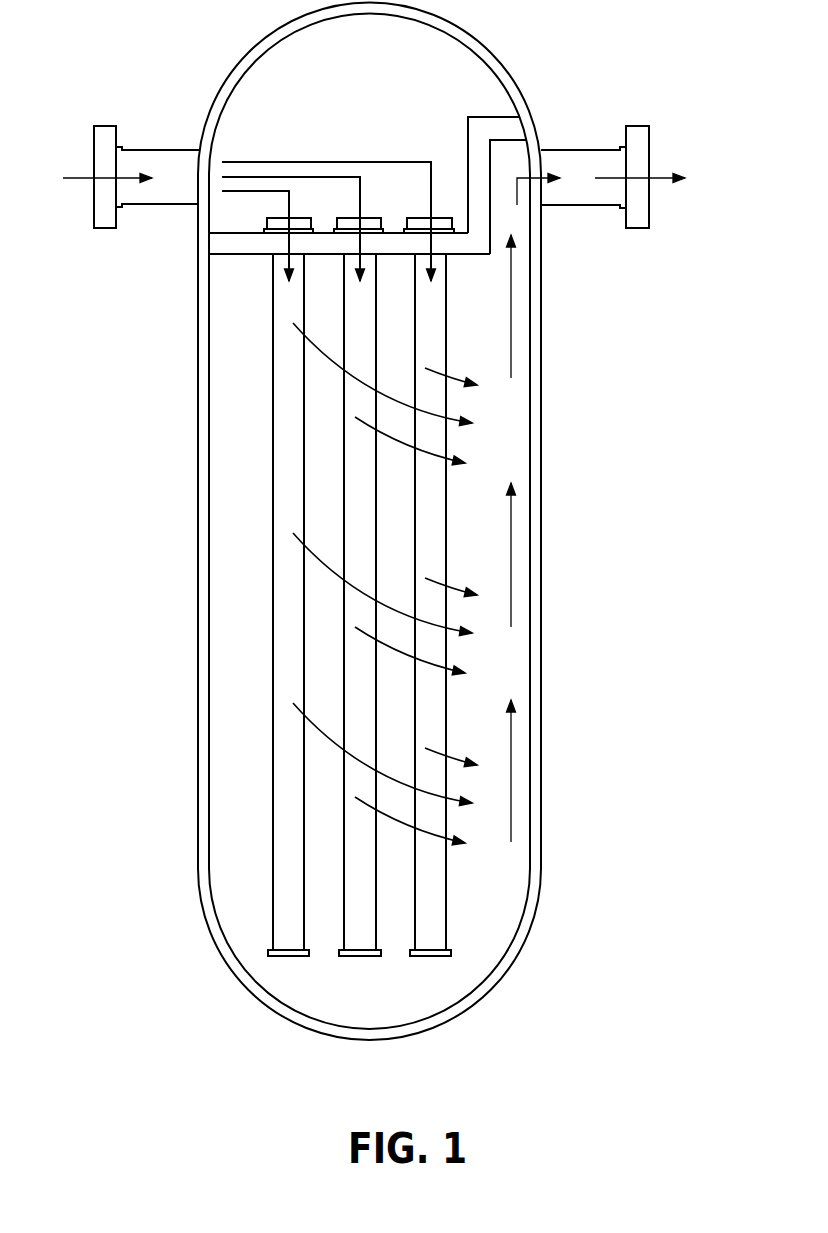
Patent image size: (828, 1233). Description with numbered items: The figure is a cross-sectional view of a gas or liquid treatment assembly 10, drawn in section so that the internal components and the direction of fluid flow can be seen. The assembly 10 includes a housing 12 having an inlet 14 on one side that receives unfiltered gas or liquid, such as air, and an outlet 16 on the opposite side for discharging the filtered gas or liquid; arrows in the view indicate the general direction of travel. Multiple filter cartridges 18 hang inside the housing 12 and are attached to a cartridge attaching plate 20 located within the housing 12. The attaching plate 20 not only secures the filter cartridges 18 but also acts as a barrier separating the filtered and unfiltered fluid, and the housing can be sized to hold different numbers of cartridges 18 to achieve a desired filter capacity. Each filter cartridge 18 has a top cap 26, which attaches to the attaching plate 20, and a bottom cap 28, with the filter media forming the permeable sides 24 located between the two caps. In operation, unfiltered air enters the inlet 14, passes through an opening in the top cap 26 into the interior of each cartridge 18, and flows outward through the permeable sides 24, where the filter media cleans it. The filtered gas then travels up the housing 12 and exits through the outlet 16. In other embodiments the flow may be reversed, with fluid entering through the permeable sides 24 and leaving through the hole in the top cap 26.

The gas or liquid treatment assembly 10 is at (165, 55).
The housing 12 is at (535, 323).
The inlet 14 is at (102, 140).
The outlet 16 is at (640, 139).
The filter cartridges 18 is at (303, 393).
The cartridge attaching plate 20 is at (482, 166).
The permeable sides 24 is at (290, 471).
The top cap 26 is at (352, 222).
The bottom cap 28 is at (287, 959).